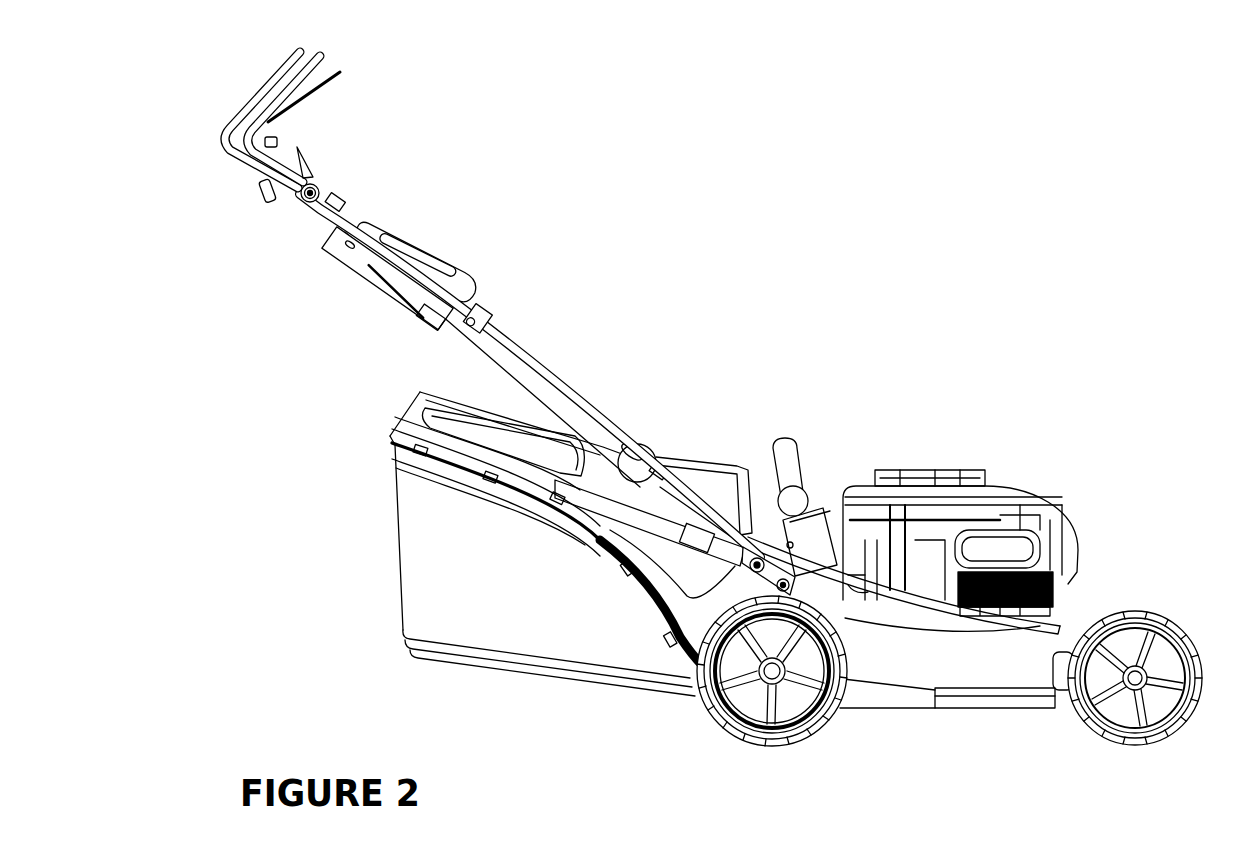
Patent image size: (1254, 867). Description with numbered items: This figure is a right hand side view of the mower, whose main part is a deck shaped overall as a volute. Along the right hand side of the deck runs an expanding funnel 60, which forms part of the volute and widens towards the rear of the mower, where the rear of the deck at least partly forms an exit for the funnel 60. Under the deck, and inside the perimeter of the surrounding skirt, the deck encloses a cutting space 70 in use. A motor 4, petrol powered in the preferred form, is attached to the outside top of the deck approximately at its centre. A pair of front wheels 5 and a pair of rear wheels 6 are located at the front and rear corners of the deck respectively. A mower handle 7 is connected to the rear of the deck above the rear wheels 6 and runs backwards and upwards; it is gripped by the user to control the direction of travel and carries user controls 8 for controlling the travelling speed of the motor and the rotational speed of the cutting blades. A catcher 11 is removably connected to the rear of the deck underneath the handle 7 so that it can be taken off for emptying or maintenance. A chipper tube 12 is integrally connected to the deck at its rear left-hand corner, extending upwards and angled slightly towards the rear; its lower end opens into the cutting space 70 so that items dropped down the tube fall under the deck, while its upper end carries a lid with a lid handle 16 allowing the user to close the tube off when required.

The motor 4 is at (985, 472).
The front wheels 5 is at (1152, 607).
The rear wheels 6 is at (716, 730).
The mower handle 7 is at (322, 196).
The user controls 8 is at (343, 75).
The catcher 11 is at (385, 548).
The chipper tube 12 is at (838, 555).
The lid handle 16 is at (790, 437).
The expanding funnel 60 is at (771, 552).
The cutting space 70 is at (983, 716).